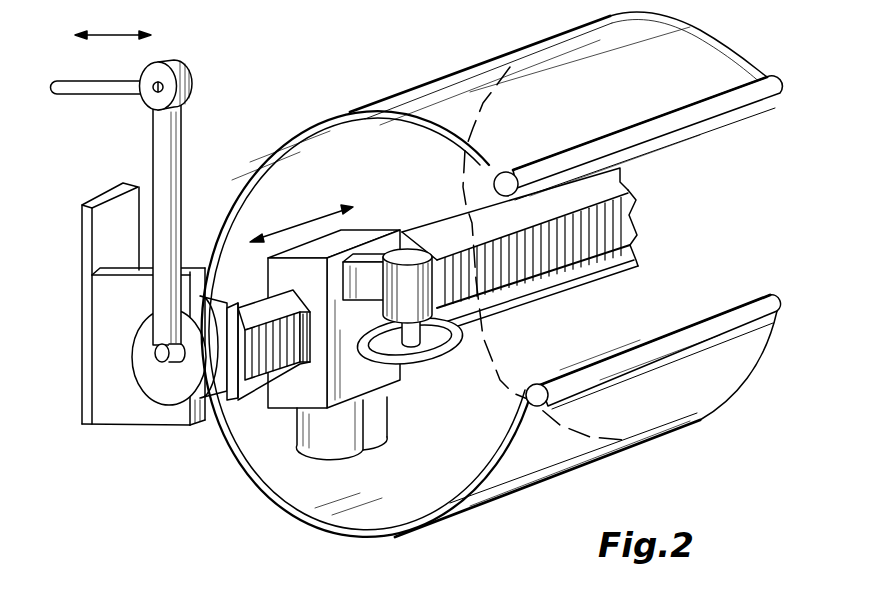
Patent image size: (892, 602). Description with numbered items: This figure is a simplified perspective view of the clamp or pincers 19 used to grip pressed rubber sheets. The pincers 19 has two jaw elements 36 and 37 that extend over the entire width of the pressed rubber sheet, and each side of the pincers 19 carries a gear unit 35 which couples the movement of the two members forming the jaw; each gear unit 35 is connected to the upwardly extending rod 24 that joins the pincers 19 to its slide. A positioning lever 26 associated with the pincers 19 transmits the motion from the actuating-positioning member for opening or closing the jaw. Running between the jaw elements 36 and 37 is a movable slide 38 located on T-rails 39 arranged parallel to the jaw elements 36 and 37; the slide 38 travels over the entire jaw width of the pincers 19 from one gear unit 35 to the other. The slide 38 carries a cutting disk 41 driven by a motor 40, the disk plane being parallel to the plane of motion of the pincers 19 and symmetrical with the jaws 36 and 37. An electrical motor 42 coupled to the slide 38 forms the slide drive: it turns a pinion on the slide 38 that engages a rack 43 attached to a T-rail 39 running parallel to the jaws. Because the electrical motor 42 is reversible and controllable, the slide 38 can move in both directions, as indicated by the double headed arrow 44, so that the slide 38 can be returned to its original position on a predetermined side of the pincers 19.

The clamp or pincers 19 is at (444, 71).
The rod 24 is at (100, 222).
The positioning lever 26 is at (167, 160).
The gear unit 35 is at (156, 388).
The jaw element 36 is at (567, 452).
The jaw element 37 is at (531, 57).
The movable slide 38 is at (287, 270).
The T-rail 39 is at (248, 397).
The motor 40 is at (407, 298).
The cutting disk 41 is at (446, 347).
The electrical motor 42 is at (364, 434).
The rack 43 is at (553, 258).
The double headed arrow 44 is at (309, 225).